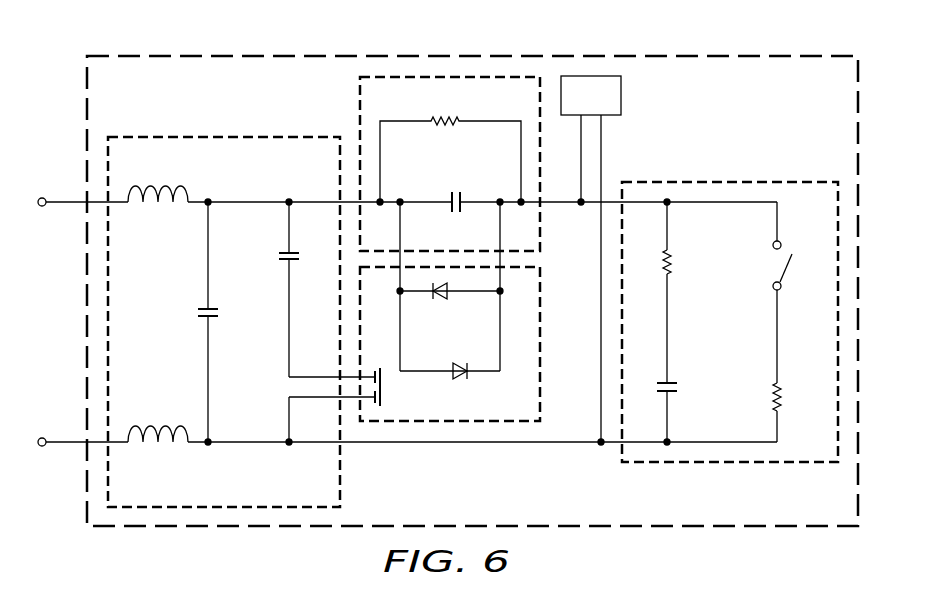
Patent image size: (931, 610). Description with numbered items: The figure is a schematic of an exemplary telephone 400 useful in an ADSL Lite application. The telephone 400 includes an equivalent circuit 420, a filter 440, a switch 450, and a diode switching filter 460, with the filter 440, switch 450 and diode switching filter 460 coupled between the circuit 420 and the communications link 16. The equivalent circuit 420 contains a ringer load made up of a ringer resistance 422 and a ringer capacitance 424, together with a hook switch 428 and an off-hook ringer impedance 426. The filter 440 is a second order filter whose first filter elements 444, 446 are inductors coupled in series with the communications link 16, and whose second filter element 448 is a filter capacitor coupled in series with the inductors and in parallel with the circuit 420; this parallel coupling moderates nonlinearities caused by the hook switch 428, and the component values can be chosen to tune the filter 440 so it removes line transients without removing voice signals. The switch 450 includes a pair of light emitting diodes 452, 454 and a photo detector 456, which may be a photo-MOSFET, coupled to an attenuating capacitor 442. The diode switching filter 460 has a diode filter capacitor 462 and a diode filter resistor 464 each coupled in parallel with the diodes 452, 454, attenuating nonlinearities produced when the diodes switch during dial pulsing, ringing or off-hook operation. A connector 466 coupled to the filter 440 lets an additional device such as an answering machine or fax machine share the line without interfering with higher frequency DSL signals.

The communications link 16 is at (68, 202).
The telephone 400 is at (695, 55).
The equivalent circuit 420 is at (718, 463).
The ringer resistance 422 is at (675, 262).
The ringer capacitance 424 is at (680, 388).
The off-hook ringer impedance 426 is at (773, 400).
The hook switch 428 is at (773, 265).
The filter 440 is at (268, 489).
The attenuating capacitor 442 is at (284, 257).
The first filter element 444 is at (165, 205).
The first filter element 446 is at (165, 446).
The second filter element 448 is at (200, 313).
The switch 450 is at (520, 409).
The light emitting diode 452 is at (438, 298).
The light emitting diode 454 is at (462, 363).
The photo detector 456 is at (384, 388).
The diode switching filter 460 is at (360, 118).
The diode filter capacitor 462 is at (458, 192).
The diode filter resistor 464 is at (440, 125).
The connector 466 is at (622, 95).